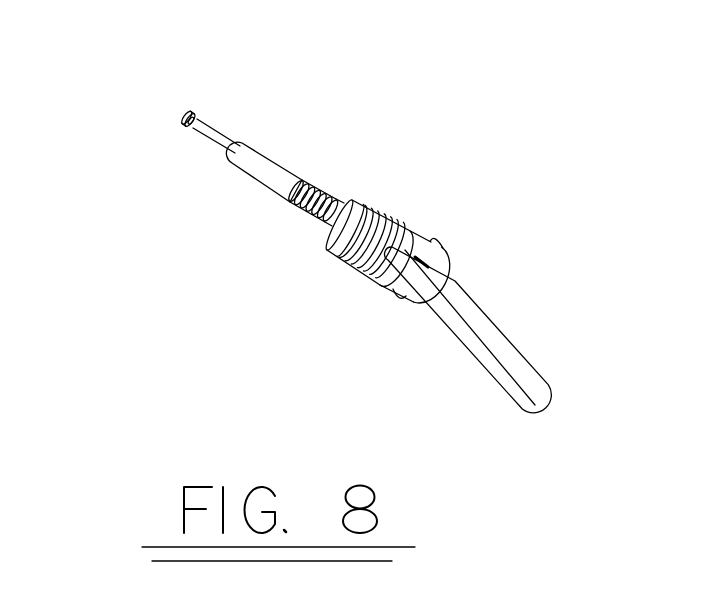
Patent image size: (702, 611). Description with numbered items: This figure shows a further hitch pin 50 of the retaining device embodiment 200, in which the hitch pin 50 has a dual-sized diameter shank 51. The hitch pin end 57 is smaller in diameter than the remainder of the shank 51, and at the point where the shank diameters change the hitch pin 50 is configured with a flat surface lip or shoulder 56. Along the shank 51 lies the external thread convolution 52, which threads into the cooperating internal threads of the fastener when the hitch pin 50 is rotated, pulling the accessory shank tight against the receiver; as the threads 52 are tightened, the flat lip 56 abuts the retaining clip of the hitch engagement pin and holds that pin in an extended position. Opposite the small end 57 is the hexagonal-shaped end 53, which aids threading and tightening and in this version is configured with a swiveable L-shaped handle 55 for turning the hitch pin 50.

The embodiment of the retaining device 200 is at (288, 345).
The hitch pin 50 is at (247, 177).
The shank 51 is at (260, 146).
The external thread convolution 52 is at (310, 222).
The hexagonal-shaped end 53 is at (455, 278).
The probe 55 is at (524, 404).
The flat surface lip or shoulder 56 is at (237, 153).
The hitch pin end 57 is at (216, 127).